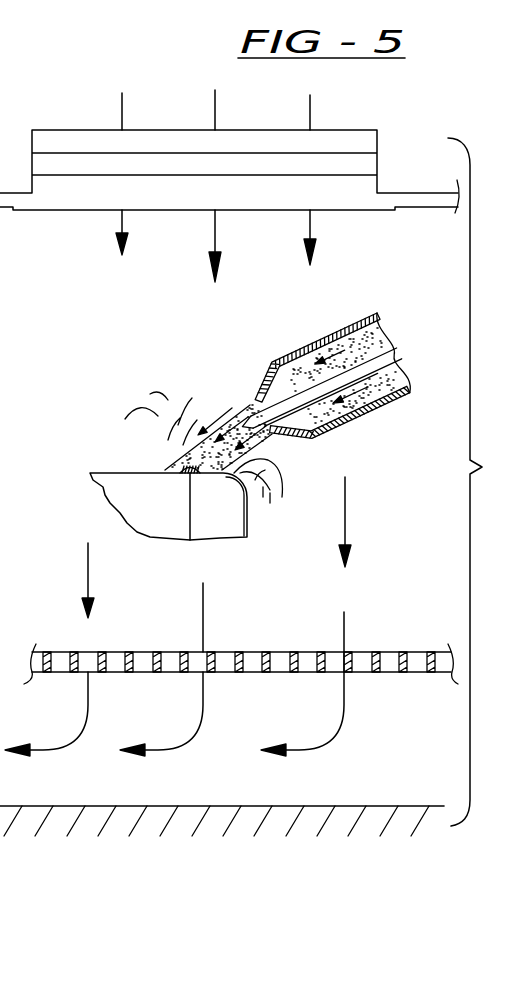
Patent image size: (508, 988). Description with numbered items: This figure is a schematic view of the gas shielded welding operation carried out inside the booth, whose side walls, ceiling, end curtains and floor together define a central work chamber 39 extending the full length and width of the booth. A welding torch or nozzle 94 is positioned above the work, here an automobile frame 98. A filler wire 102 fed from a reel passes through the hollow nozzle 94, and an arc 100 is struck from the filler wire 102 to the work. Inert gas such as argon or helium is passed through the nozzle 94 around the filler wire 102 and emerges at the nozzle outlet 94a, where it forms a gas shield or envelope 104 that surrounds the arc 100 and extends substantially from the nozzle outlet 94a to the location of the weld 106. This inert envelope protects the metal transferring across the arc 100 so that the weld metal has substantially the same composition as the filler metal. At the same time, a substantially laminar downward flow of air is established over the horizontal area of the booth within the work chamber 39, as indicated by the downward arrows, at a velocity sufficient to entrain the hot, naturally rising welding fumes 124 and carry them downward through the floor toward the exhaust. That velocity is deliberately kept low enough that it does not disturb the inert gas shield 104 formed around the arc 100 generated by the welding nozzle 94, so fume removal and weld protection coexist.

The central work chamber 39 is at (126, 301).
The welding torch or nozzle 94 is at (341, 332).
The nozzle outlet 94a is at (243, 412).
The filler wire 102 is at (385, 357).
The arc 100 is at (226, 421).
The welding fumes 124 is at (262, 452).
The automobile frame 98 is at (100, 472).
The gas shield or envelope 104 is at (178, 466).
The weld 106 is at (190, 476).